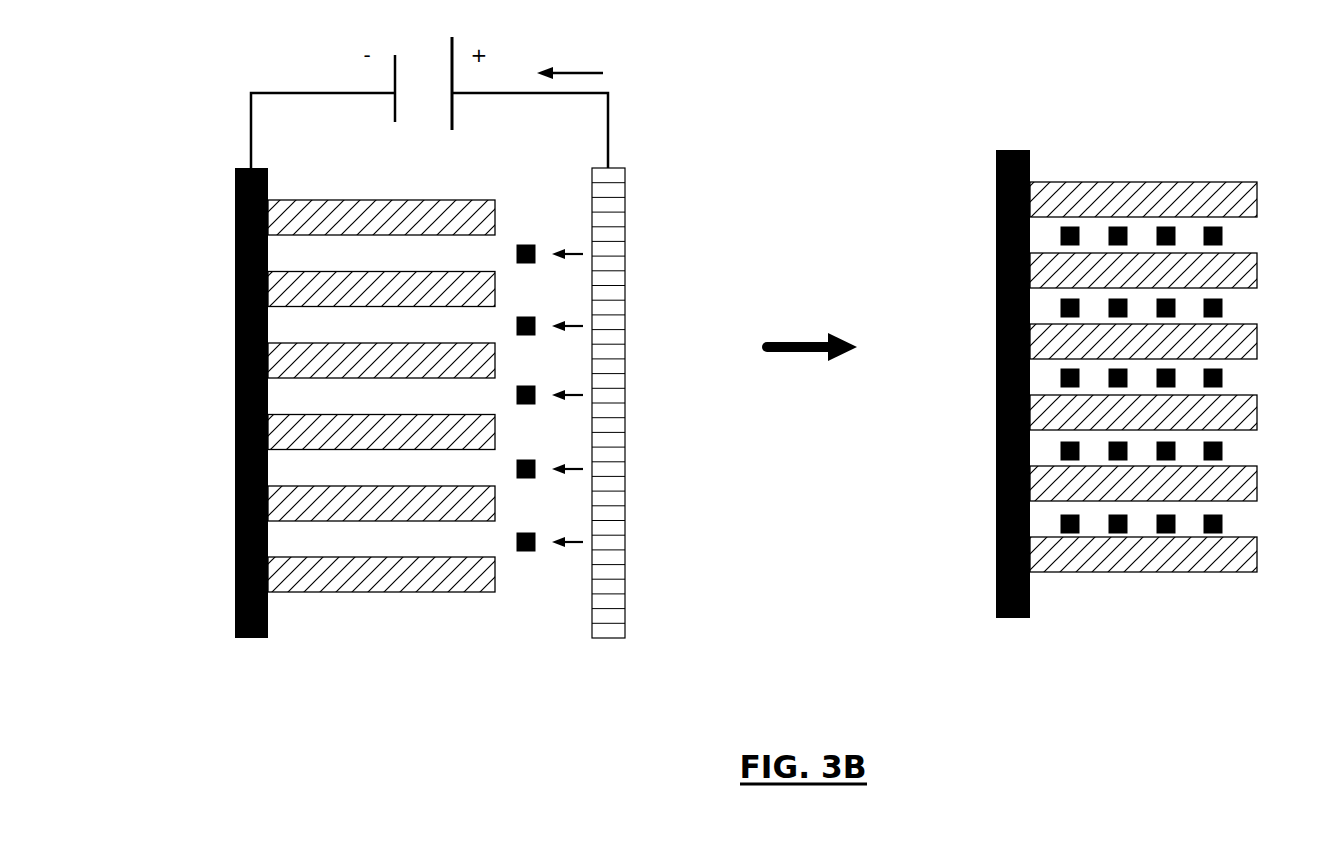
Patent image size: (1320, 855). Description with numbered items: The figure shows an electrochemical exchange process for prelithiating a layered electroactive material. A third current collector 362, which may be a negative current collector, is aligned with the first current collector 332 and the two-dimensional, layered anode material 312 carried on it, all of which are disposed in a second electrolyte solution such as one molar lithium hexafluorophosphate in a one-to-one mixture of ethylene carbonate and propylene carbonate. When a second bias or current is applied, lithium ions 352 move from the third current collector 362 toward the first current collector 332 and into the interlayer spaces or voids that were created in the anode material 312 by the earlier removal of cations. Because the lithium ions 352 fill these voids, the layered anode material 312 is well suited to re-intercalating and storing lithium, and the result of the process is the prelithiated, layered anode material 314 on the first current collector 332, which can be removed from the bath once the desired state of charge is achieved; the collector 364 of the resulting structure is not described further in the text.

The two-dimensional, layered anode material 312 is at (383, 627).
The prelithiated, layered anode material 314 is at (1189, 607).
The first current collector 332 is at (235, 512).
The lithium ions 352 is at (525, 245).
The third current collector 362 is at (625, 243).
The electrode of resulting structure 364 is at (996, 468).